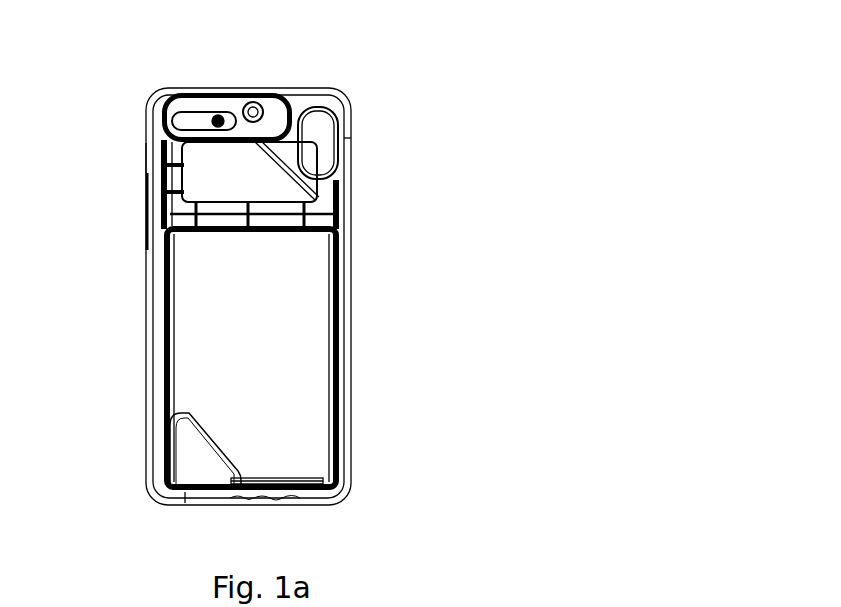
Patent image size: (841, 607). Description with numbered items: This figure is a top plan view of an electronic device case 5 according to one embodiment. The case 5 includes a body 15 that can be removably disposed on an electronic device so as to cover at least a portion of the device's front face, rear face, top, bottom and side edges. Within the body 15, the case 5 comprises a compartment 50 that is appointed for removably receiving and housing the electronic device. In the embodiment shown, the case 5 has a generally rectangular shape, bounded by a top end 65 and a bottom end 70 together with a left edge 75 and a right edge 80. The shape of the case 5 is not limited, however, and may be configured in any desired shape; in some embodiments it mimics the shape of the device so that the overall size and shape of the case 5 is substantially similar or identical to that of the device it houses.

The case 5 is at (436, 120).
The body 15 is at (340, 323).
The compartment 50 is at (321, 357).
The top end 65 is at (178, 90).
The bottom end 70 is at (305, 496).
The left edge 75 is at (142, 300).
The right edge 80 is at (355, 256).